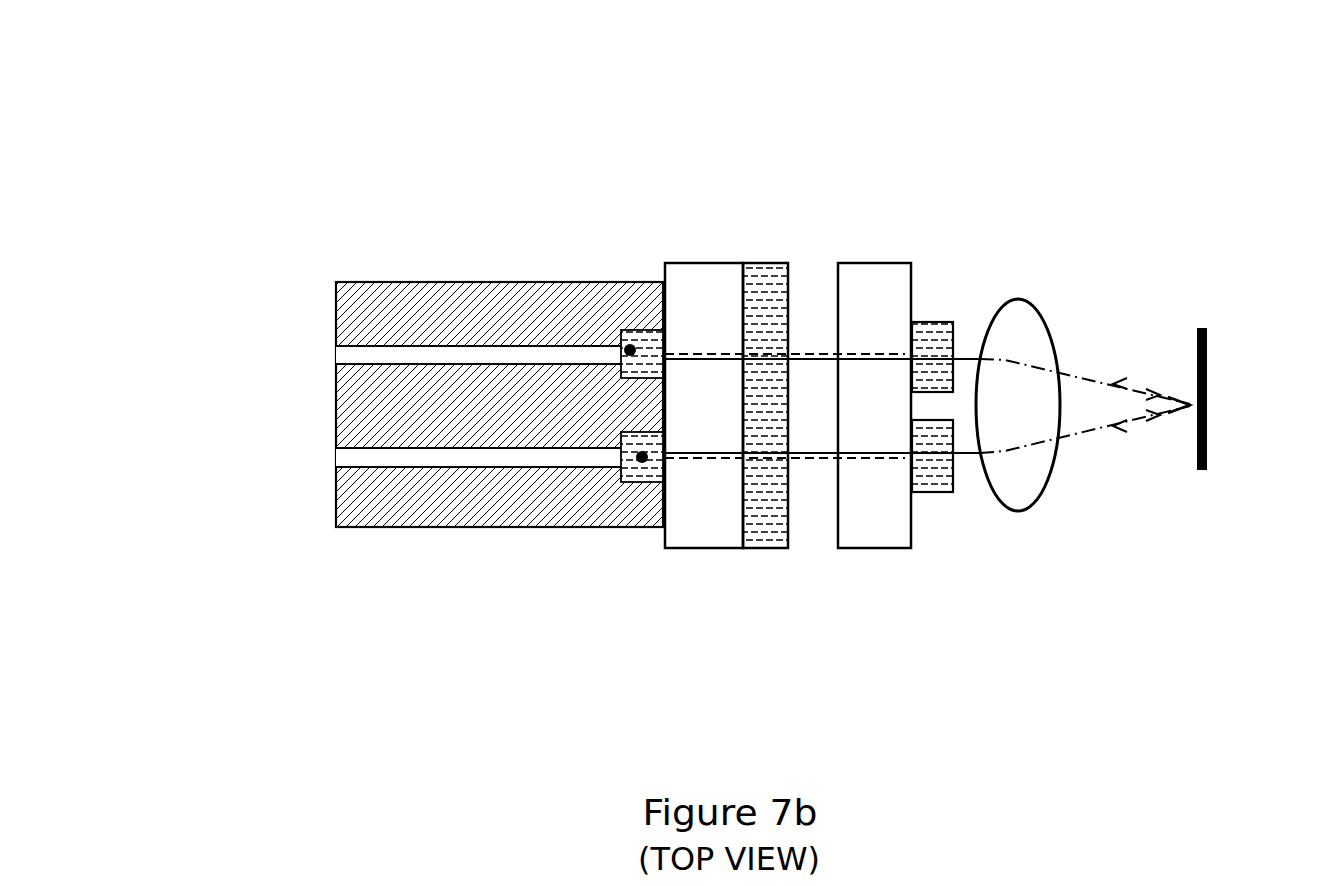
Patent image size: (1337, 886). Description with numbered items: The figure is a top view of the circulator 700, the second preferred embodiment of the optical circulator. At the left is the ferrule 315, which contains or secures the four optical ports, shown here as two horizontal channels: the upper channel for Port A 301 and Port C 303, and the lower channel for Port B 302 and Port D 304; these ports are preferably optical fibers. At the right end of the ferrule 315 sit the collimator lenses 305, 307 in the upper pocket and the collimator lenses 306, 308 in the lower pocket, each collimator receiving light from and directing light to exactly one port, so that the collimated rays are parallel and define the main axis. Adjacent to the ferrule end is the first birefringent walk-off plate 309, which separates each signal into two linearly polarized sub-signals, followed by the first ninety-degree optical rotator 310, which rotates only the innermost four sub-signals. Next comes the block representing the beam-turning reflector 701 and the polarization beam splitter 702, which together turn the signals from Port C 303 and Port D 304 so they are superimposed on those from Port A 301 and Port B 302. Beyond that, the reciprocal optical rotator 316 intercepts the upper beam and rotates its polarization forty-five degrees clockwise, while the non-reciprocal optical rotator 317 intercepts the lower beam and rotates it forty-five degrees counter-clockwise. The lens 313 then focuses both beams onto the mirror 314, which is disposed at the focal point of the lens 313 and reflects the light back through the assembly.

The circulator 700 is at (402, 58).
The ferrule 315 is at (418, 282).
The Port A 301 is at (384, 334).
The Port C 303 is at (347, 357).
The Port B 302 is at (382, 478).
The Port D 304 is at (347, 458).
The collimator lens 305 is at (556, 263).
The collimator lens 307 is at (628, 348).
The collimator lens 306 is at (551, 543).
The collimator lens 308 is at (642, 457).
The first birefringent walk-off plate 309 is at (675, 550).
The first 90° optical rotator 310 is at (777, 550).
The beam-turning reflector 701 is at (835, 326).
The polarization beam splitter 702 is at (868, 263).
The reciprocal optical rotator 316 is at (938, 317).
The non-reciprocal optical rotator 317 is at (947, 495).
The lens 313 is at (1048, 490).
The mirror 314 is at (1205, 328).